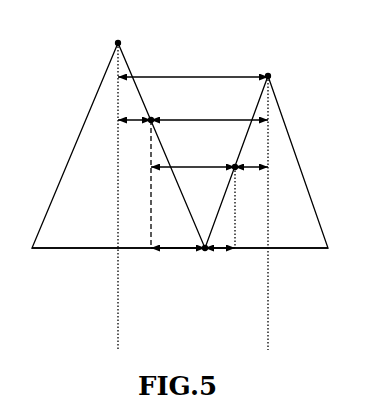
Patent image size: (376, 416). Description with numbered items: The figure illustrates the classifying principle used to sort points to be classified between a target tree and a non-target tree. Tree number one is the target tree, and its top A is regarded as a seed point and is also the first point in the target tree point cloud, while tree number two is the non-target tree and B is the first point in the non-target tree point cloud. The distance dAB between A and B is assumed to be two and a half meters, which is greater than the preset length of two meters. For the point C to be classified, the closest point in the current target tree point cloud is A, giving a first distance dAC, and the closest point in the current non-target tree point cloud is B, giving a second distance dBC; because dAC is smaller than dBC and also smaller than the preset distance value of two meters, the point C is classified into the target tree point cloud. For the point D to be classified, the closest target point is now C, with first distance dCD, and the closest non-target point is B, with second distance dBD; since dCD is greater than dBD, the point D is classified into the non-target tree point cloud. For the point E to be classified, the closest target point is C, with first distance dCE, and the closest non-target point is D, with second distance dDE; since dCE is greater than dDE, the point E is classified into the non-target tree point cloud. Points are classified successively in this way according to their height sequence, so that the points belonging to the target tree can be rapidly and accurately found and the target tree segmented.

The top of tree #1 A is at (118, 32).
The first point in the non-target tree point cloud B is at (267, 65).
The point to be classified C is at (156, 108).
The point to be classified D is at (234, 155).
The point to be classified E is at (204, 259).
The distance between A and B dAB is at (193, 66).
The first distance dAC is at (134, 134).
The second distance dBC is at (209, 110).
The first distance dCD is at (193, 179).
The second distance dBD is at (251, 183).
The first distance dCE is at (178, 260).
The second distance dDE is at (223, 260).